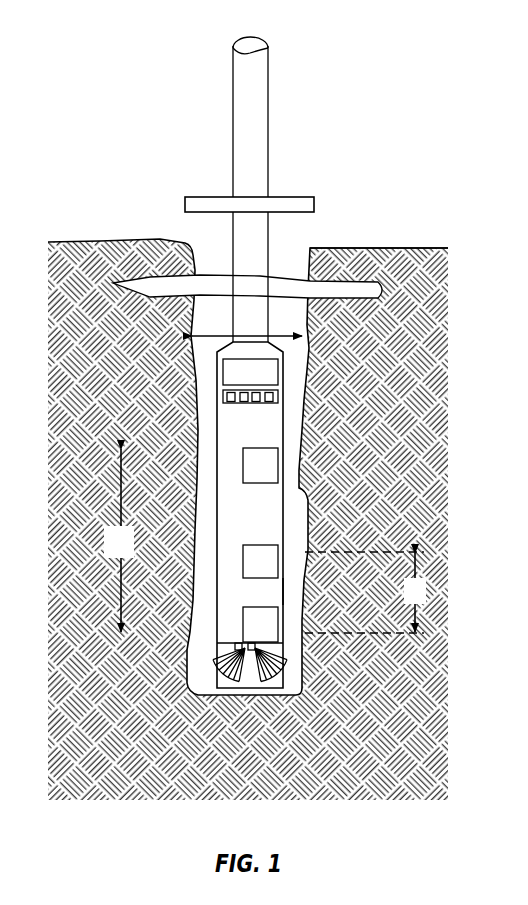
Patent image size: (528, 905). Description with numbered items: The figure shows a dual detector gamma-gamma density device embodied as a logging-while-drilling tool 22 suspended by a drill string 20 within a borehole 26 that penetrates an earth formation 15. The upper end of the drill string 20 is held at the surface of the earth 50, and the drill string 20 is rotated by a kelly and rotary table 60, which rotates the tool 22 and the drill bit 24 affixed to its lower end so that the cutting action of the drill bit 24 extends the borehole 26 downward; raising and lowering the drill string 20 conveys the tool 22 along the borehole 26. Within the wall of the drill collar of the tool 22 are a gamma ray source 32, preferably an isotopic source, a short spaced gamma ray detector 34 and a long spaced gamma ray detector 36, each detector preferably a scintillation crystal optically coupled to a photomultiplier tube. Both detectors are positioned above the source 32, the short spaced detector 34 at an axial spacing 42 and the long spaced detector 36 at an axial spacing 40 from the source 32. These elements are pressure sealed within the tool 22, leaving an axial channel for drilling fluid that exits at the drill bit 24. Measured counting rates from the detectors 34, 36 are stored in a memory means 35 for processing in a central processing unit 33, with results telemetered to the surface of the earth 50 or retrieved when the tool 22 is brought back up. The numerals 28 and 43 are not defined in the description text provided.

The earth formation 15 is at (119, 689).
The drill string 20 is at (262, 258).
The logging-while-drilling (LWD) tool 22 is at (266, 517).
The drill bit 24 is at (218, 652).
The borehole 26 is at (216, 269).
The borehole diameter 28 is at (210, 336).
The gamma ray source 32 is at (273, 460).
The central processing unit (CPU) 33 is at (280, 395).
The short spaced gamma ray detector 34 is at (270, 558).
The memory means 35 is at (278, 368).
The long spaced gamma ray detector 36 is at (273, 627).
The axial spacing of long spaced detector 40 is at (120, 509).
The axial spacing of short spaced detector 42 is at (418, 570).
The tool housing 43 is at (292, 592).
The surface of the earth 50 is at (382, 248).
The kelly and rotary table 60 is at (293, 202).